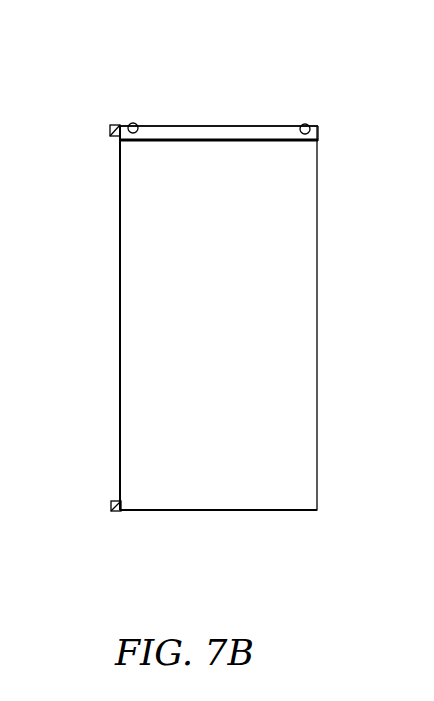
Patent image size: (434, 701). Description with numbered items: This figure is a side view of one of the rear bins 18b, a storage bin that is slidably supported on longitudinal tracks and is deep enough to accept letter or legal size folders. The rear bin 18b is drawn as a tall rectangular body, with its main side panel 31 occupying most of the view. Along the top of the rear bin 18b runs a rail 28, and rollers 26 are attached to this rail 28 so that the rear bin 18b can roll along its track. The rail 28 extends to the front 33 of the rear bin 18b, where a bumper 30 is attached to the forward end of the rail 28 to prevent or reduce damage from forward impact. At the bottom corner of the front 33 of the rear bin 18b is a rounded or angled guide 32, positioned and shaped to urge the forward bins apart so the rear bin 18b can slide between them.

The rear bin 18b is at (93, 246).
The rollers 26 is at (128, 123).
The rails 28 is at (196, 131).
The bumper 30 is at (110, 128).
The panel 31 is at (217, 298).
The guides 32 is at (112, 503).
The front 33 is at (120, 377).